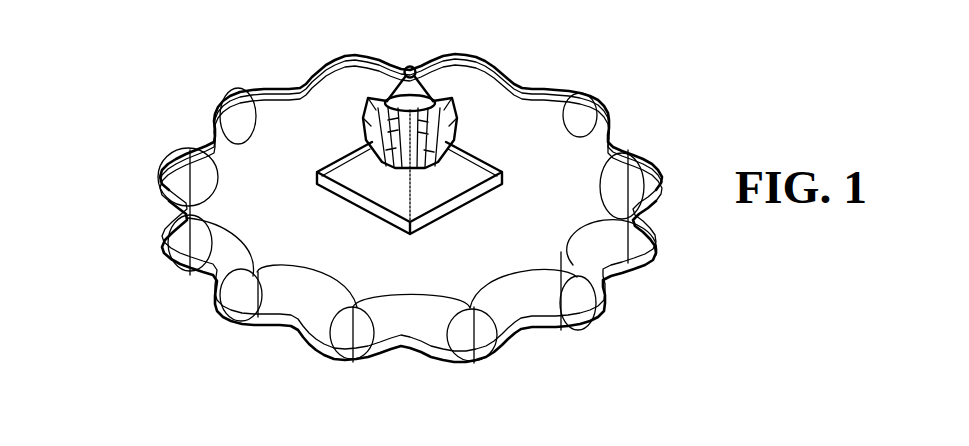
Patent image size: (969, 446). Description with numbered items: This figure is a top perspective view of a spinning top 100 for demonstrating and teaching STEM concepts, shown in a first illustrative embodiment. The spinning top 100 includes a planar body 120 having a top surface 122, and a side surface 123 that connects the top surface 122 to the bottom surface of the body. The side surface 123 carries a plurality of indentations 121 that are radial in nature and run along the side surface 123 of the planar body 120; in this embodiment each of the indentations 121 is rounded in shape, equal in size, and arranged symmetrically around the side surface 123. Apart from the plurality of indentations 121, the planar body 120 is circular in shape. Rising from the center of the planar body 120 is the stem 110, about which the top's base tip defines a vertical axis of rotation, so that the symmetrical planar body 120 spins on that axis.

The spinning top 100 is at (198, 78).
The stem 110 is at (324, 138).
The planar body 120 is at (219, 249).
The plurality of indentations 121 is at (283, 338).
The top surface 122 is at (577, 171).
The side surface 123 is at (609, 320).